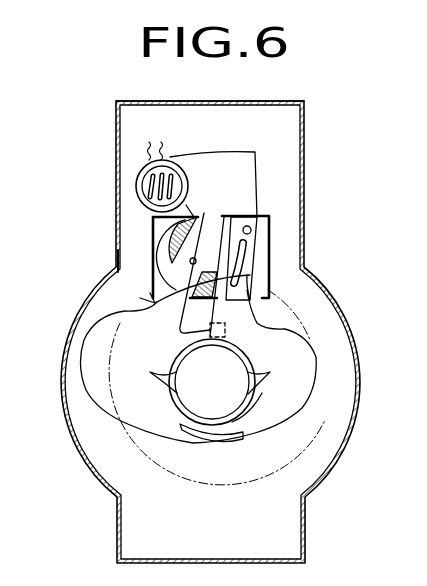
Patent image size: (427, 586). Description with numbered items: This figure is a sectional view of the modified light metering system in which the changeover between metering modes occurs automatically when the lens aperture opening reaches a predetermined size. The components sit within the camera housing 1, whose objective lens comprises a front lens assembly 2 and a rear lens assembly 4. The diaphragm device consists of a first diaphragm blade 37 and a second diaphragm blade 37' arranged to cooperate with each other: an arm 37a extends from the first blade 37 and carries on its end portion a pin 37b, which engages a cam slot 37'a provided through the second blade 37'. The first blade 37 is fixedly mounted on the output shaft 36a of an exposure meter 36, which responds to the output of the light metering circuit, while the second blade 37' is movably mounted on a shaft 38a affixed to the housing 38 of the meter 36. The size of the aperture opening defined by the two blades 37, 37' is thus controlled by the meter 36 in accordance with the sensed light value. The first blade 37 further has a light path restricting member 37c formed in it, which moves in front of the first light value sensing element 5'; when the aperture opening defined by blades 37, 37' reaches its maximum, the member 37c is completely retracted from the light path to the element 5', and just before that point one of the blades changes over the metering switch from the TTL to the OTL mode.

The housing 1 is at (219, 101).
The front lens assembly 2 is at (312, 422).
The rear lens assembly 4 is at (233, 390).
The first light value sensing element 5' is at (138, 177).
The exposure meter 36 is at (168, 240).
The output shaft 36a is at (118, 260).
The first diaphragm blade 37 is at (173, 359).
The second diaphragm blade 37' is at (315, 385).
The arm 37a is at (204, 222).
The pin 37b is at (252, 286).
The light path restricting member 37c is at (250, 172).
The cam slot 37'a is at (299, 263).
The housing of meter 38 is at (263, 225).
The shaft 38a is at (256, 231).